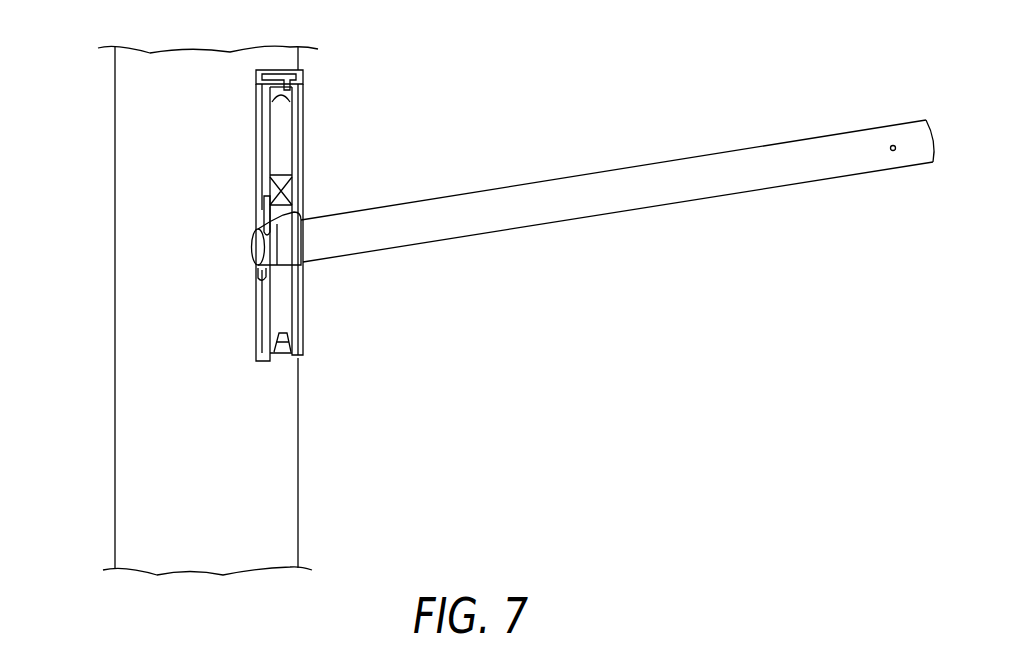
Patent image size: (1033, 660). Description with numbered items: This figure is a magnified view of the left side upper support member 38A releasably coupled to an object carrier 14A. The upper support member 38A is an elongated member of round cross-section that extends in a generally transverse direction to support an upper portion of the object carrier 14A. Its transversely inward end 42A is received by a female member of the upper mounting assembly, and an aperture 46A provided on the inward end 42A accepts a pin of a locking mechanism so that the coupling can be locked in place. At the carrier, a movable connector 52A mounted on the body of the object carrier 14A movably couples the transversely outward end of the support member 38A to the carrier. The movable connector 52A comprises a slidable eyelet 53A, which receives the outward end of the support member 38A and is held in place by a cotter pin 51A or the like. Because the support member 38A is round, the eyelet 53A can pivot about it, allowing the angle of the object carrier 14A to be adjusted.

The object carrier 14A is at (153, 317).
The movable connector 52A is at (328, 157).
The cotter pin 51A is at (262, 210).
The slidable eyelet 53A is at (293, 248).
The upper support member 38A is at (568, 191).
The transversely inward end 42A is at (902, 110).
The aperture 46A is at (895, 151).